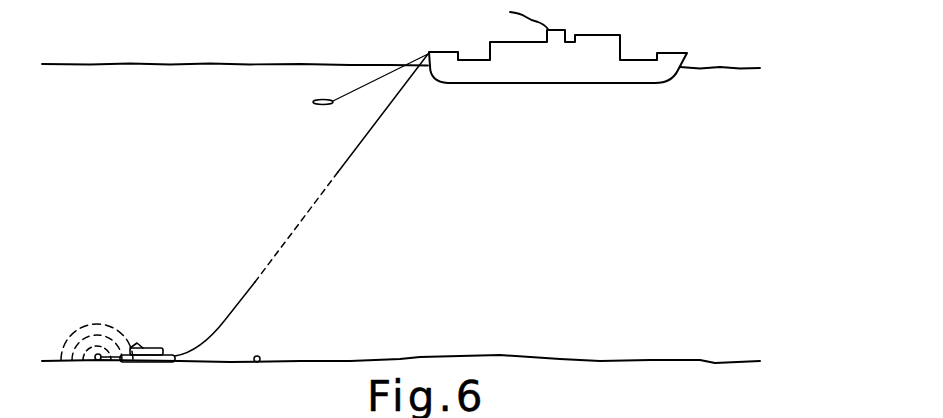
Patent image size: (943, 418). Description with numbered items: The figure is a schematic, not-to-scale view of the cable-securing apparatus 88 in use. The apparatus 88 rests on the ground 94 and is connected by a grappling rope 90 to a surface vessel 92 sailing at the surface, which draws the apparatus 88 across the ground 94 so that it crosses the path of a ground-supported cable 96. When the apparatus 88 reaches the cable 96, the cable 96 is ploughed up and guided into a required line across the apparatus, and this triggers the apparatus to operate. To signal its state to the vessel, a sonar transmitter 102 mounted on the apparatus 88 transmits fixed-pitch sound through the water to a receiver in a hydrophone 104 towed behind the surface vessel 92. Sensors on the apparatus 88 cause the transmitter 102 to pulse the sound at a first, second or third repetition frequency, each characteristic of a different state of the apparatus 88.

The apparatus 88 is at (159, 340).
The grappling rope 90 is at (245, 297).
The surface vessel 92 is at (569, 71).
The ground 94 is at (420, 355).
The ground-supported cable 96 is at (260, 357).
The transmitter 102 is at (97, 365).
The hydrophone 104 is at (325, 108).